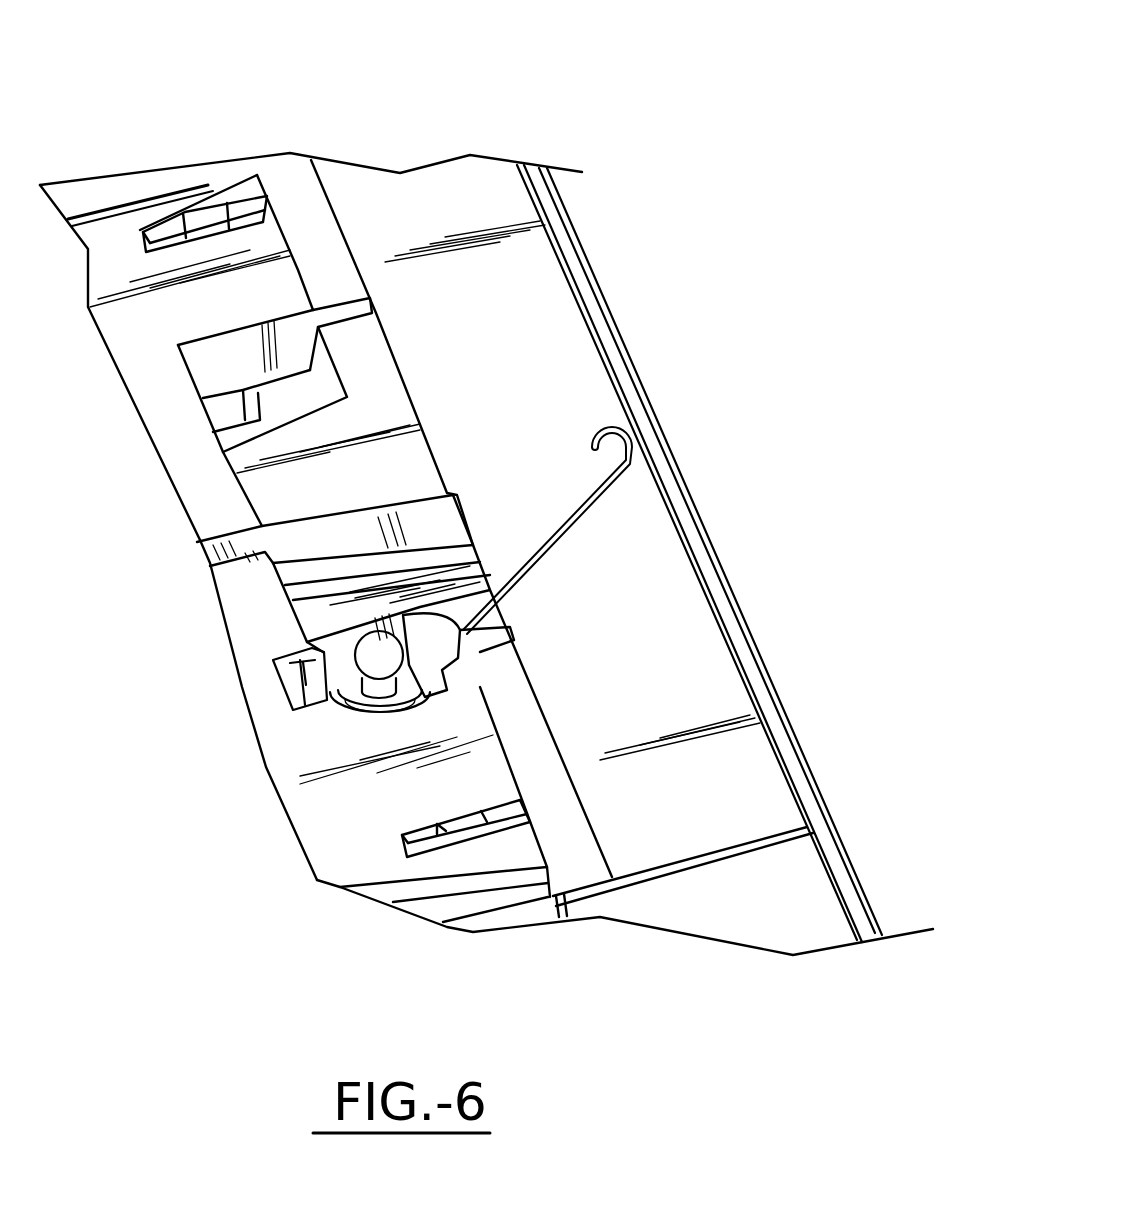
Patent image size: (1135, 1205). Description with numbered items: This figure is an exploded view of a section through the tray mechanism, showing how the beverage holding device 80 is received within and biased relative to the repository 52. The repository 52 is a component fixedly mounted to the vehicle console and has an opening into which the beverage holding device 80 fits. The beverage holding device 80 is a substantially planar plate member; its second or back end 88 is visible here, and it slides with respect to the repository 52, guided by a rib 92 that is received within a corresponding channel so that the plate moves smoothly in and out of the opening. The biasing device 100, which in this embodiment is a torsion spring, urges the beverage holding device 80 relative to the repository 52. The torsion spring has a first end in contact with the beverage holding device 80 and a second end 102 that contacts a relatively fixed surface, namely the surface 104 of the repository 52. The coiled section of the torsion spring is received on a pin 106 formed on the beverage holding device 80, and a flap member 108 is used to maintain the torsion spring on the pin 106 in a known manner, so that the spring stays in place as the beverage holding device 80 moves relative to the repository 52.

The repository 52 is at (563, 250).
The beverage holding device 80 is at (257, 631).
The back end 88 is at (230, 450).
The rib 92 is at (243, 540).
The biasing device 100 is at (728, 286).
The second end 102 is at (607, 428).
The surface 104 is at (668, 547).
The pin 106 is at (345, 698).
The flap member 108 is at (323, 678).